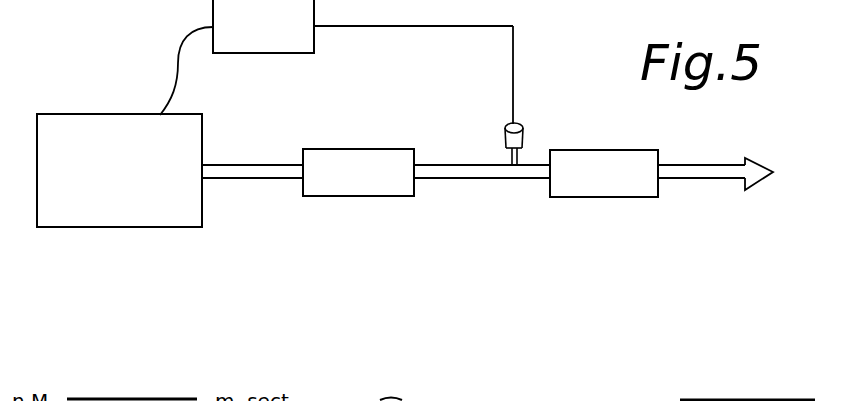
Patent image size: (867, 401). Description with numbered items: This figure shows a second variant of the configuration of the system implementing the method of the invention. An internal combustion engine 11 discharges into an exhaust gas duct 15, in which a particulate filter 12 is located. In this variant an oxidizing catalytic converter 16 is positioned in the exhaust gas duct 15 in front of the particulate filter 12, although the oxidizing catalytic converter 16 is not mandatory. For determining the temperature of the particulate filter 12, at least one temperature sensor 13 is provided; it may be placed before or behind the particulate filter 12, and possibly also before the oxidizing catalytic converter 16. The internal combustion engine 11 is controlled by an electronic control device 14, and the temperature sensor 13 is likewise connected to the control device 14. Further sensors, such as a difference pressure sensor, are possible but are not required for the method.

The internal combustion engine 11 is at (141, 184).
The particulate filter 12 is at (625, 184).
The temperature sensor 13 is at (523, 135).
The electronic control device 14 is at (242, 37).
The exhaust gas duct 15 is at (256, 180).
The oxidizing catalytic converter 16 is at (380, 184).